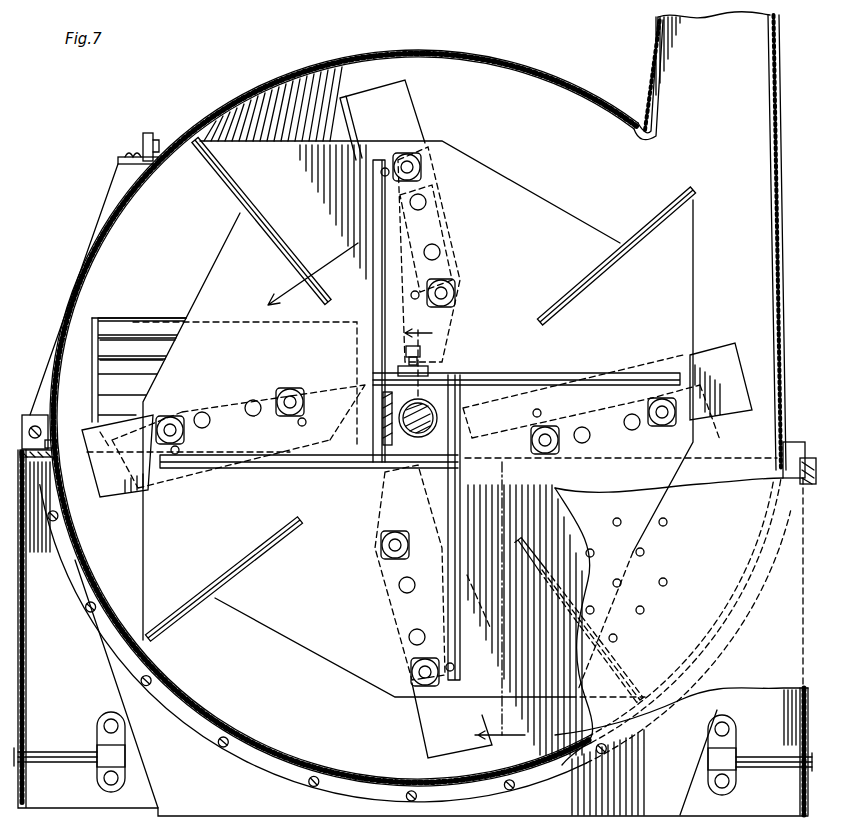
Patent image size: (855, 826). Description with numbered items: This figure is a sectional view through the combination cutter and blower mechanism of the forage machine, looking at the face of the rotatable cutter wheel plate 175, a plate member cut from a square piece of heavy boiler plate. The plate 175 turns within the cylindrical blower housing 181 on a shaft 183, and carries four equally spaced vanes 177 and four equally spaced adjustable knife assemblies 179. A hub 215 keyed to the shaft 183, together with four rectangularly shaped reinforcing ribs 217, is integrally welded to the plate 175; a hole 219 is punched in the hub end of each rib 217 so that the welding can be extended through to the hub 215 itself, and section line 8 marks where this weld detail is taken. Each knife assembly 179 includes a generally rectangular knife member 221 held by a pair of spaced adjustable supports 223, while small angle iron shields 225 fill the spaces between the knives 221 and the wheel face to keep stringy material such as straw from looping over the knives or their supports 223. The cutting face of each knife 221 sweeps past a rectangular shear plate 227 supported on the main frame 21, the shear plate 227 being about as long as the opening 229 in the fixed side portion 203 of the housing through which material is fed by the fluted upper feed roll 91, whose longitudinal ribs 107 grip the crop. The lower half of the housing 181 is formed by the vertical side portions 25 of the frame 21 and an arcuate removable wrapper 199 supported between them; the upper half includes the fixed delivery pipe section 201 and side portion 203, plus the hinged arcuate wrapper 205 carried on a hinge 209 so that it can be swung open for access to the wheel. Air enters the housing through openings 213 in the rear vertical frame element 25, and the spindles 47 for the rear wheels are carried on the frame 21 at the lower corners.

The section line 8— 8 is at (465, 537).
The main frame 21 is at (20, 488).
The vertical side portions of the frame 25 is at (735, 488).
The spindles 47 is at (70, 745).
The upper feed roll 91 is at (112, 345).
The ribs or flutes 107 is at (155, 362).
The cutter wheel plate 175 is at (486, 176).
The vanes 177 is at (228, 193).
The knife assemblies 179 is at (450, 230).
The blower housing 181 is at (786, 281).
The shaft 183 is at (409, 430).
The arcuate removable wrapper 199 is at (282, 754).
The delivery pipe section 201 is at (782, 56).
The side portion of blower housing 203 is at (475, 72).
The arcuate wrapper 205 is at (386, 52).
The hinge 209 is at (33, 420).
The openings 213 is at (665, 580).
The hub 215 is at (437, 402).
The reinforcing ribs 217 is at (380, 306).
The hole 219 is at (382, 422).
The knife member 221 is at (402, 118).
The adjustable knife supports 223 is at (420, 162).
The angle iron shields 225 is at (442, 213).
The shear plate 227 is at (104, 446).
The opening 229 is at (136, 320).